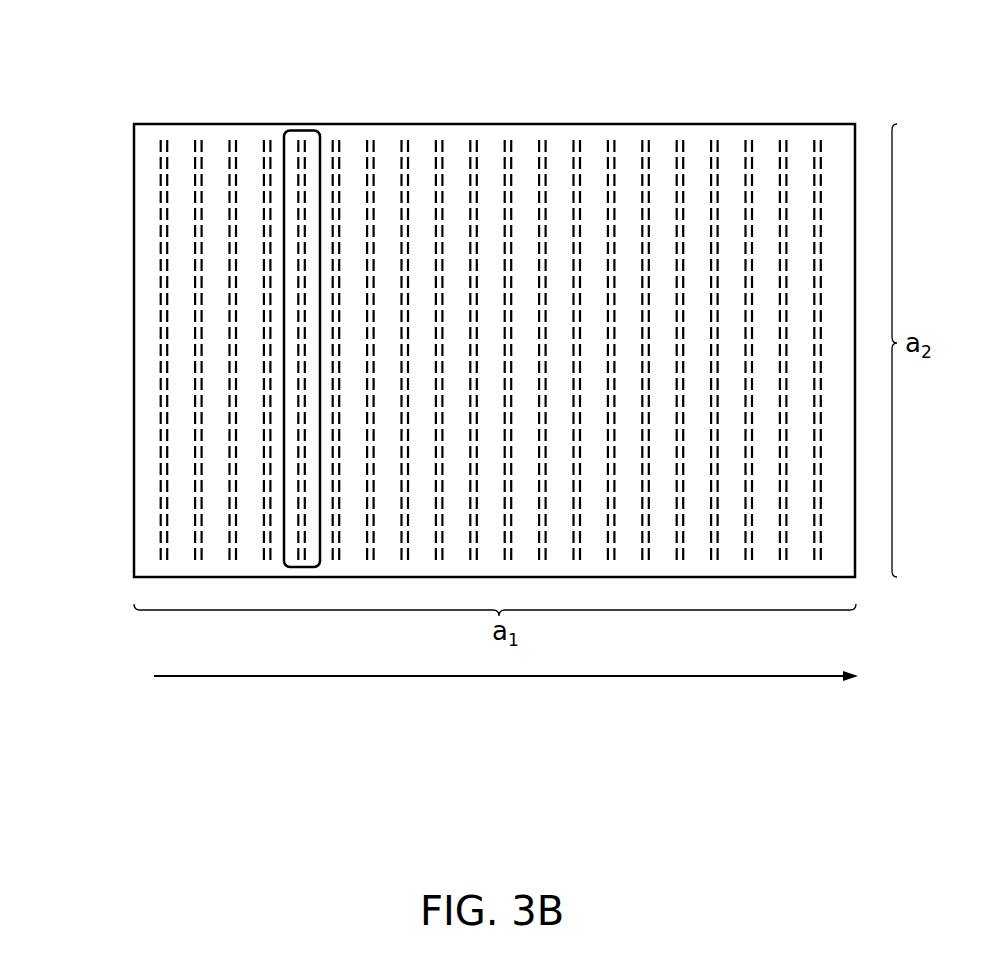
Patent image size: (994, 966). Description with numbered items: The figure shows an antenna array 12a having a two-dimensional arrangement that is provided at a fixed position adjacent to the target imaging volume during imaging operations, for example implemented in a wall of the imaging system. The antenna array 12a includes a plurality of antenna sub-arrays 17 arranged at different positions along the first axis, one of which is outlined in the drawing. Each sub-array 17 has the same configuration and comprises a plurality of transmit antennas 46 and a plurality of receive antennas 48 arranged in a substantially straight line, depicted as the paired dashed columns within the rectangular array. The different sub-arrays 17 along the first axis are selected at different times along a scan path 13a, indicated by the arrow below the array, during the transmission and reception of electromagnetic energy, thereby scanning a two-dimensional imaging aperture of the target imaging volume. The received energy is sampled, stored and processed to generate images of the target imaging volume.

The antenna array 12a is at (101, 163).
The antenna sub-array 17 is at (300, 130).
The transmit antenna 46 is at (297, 162).
The receive antenna 48 is at (305, 178).
The scan path 13a is at (505, 678).